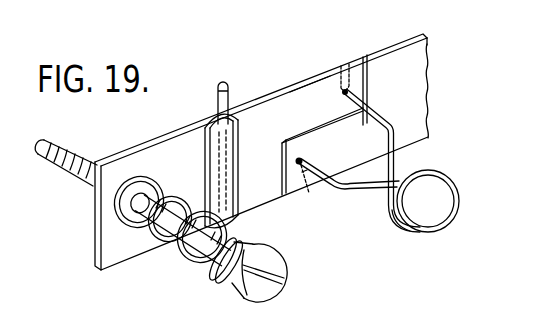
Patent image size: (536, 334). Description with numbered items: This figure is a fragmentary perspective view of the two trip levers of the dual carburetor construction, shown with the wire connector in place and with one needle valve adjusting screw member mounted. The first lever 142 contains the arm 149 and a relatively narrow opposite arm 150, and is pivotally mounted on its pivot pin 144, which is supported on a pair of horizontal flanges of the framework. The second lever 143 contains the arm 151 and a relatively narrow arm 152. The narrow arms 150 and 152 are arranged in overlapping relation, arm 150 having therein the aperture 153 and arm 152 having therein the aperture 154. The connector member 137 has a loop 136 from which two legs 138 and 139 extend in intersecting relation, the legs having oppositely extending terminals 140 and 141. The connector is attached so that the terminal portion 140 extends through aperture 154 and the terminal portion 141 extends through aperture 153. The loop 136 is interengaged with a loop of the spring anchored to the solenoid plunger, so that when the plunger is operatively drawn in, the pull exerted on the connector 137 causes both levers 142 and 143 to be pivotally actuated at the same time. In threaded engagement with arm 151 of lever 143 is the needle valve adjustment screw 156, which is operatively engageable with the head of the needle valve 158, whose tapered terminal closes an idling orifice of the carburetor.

The loop 136 is at (408, 228).
The connector member 137 is at (463, 212).
The leg 138 is at (383, 122).
The leg 139 is at (349, 189).
The terminal 140 is at (345, 66).
The terminal 141 is at (313, 189).
The lever 142 is at (388, 43).
The lever 143 is at (319, 72).
The pivot pin 144 is at (218, 101).
The arm 149 is at (423, 64).
The narrow arm 150 is at (285, 197).
The arm 151 is at (145, 157).
The narrow arm 152 is at (313, 81).
The aperture 153 is at (302, 158).
The aperture 154 is at (343, 93).
The needle valve adjustment screw 156 is at (230, 284).
The needle valve 158 is at (173, 246).